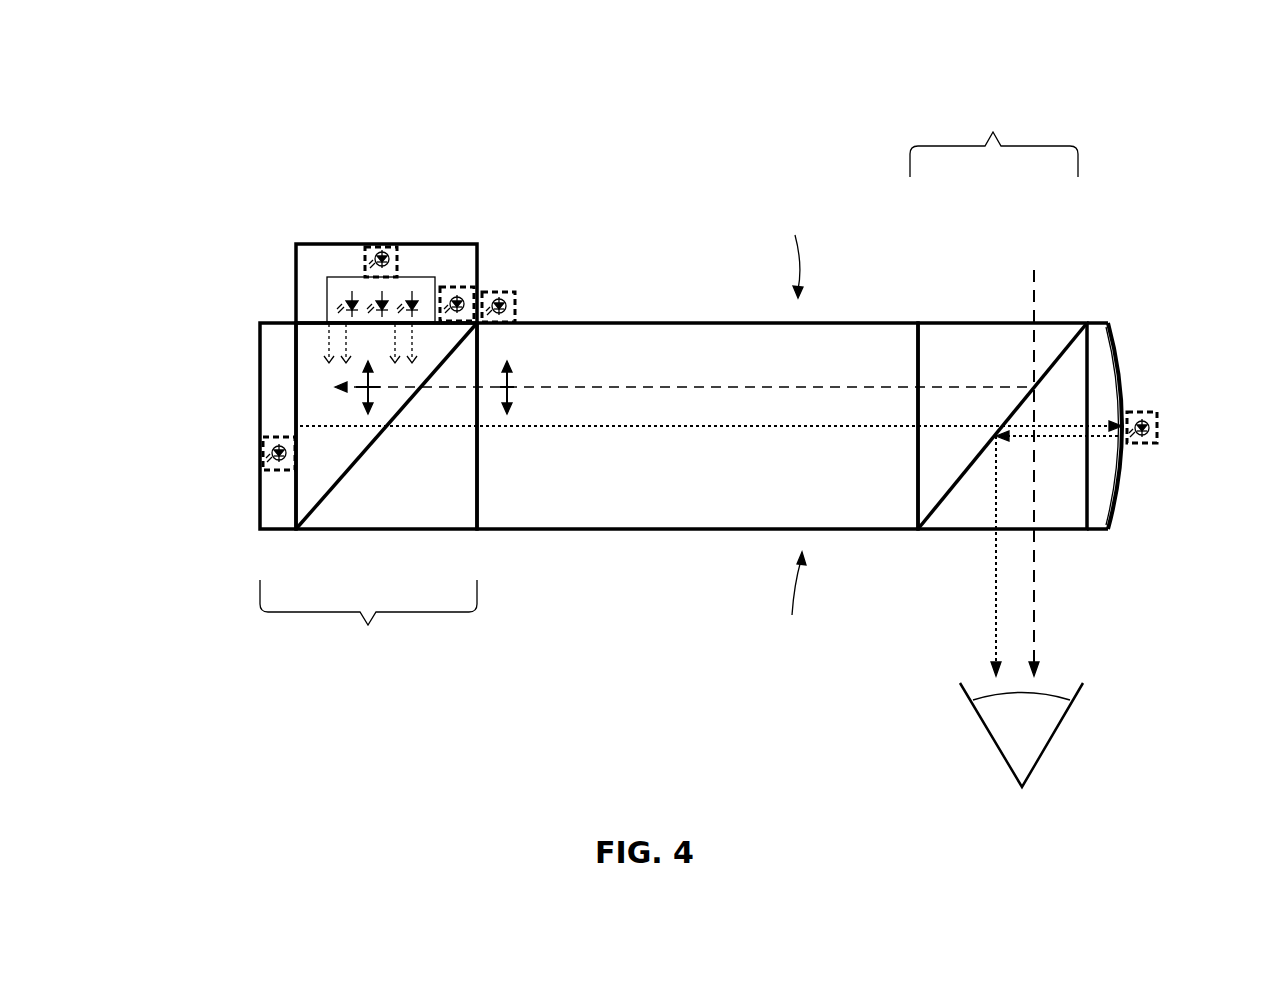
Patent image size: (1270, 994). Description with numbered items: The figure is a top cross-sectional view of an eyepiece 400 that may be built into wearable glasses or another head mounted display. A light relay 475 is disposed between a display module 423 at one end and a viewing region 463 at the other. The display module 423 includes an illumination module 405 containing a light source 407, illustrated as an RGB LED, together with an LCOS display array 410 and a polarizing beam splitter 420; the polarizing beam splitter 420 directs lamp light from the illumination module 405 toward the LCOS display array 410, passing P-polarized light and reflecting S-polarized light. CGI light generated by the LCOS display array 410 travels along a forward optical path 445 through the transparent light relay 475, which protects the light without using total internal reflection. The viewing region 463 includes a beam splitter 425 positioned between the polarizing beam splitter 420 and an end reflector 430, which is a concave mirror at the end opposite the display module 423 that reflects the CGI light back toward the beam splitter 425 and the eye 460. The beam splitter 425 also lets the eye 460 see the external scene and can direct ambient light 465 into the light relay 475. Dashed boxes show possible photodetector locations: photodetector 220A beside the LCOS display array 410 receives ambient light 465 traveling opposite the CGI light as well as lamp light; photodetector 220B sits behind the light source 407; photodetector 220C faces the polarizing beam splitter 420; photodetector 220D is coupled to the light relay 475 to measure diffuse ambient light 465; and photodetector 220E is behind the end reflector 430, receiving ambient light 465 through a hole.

The eyepiece 400 is at (872, 299).
The illumination module 405 is at (296, 243).
The light source 407 is at (424, 277).
The LCOS display array 410 is at (260, 322).
The polarizing beam splitter 420 is at (325, 498).
The display module 423 is at (368, 627).
The beam splitter 425 is at (1077, 327).
The end reflector 430 is at (1112, 522).
The forward optical path 445 is at (620, 426).
The eye 460 is at (1021, 735).
The viewing region 463 is at (994, 131).
The ambient light 465 is at (1031, 449).
The light relay 475 is at (645, 322).
The photodetector 220A is at (260, 470).
The photodetector 220B is at (368, 247).
The photodetector 220C is at (465, 288).
The photodetector 220D is at (515, 302).
The photodetector 220E is at (1158, 432).